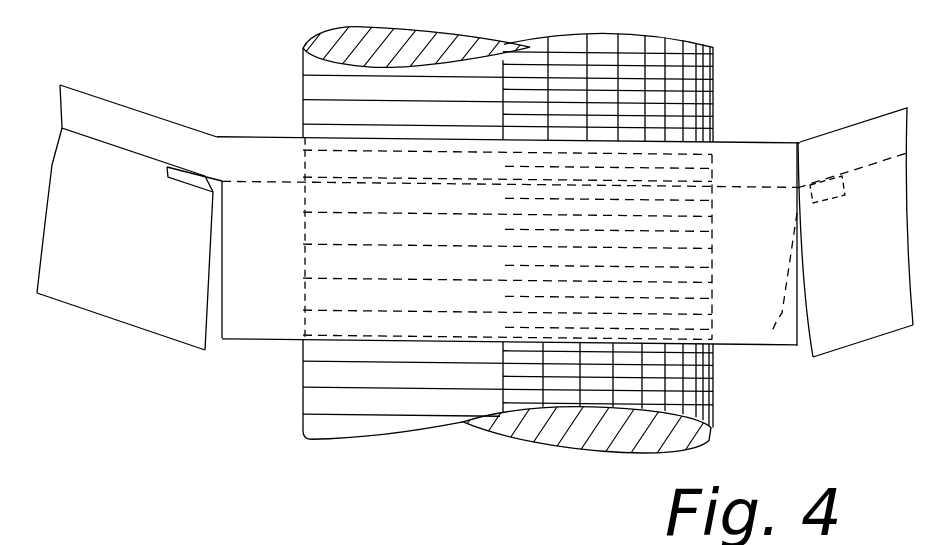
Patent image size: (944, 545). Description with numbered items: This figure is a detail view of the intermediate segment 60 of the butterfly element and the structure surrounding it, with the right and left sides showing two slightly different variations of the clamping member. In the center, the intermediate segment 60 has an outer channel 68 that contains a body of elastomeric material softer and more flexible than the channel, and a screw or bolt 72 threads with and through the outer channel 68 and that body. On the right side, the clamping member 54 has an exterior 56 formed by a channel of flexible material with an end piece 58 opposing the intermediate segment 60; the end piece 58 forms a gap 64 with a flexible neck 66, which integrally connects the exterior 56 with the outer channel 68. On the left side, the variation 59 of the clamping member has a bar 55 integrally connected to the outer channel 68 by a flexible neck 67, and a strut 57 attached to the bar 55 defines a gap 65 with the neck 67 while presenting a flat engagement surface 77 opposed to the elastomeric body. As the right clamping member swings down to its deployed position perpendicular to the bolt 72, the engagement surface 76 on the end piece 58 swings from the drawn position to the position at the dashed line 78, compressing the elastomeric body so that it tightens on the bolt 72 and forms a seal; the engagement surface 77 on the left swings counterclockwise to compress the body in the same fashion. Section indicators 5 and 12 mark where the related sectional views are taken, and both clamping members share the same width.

The section line 5- 5 is at (504, 0).
The section line 12- 12 is at (163, 110).
The clamping member 54 is at (868, 345).
The bar 55 is at (192, 127).
The exterior 56 is at (890, 108).
The strut 57 is at (185, 350).
The end piece 58 is at (810, 185).
The clamping member variation 59 is at (147, 329).
The intermediate segment 60 is at (727, 351).
The gap 64 is at (840, 192).
The gap 65 is at (200, 180).
The flexible neck 66 is at (800, 140).
The flexible neck 67 is at (203, 148).
The outer channel 68 is at (735, 140).
The bolt 72 is at (713, 62).
The engagement surface 76 is at (808, 347).
The engagement surface 77 is at (213, 335).
The dashed line 78 is at (771, 335).